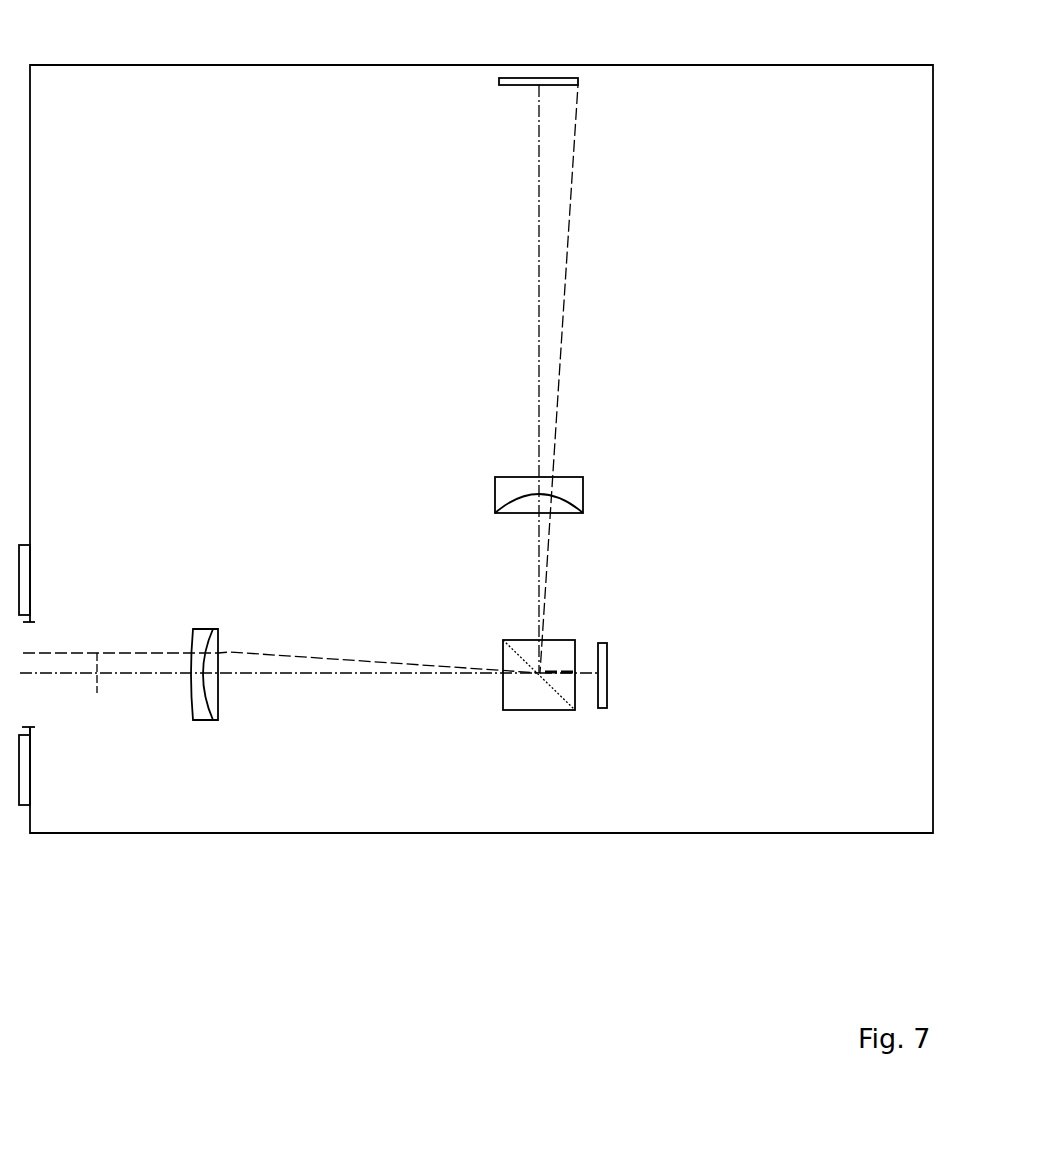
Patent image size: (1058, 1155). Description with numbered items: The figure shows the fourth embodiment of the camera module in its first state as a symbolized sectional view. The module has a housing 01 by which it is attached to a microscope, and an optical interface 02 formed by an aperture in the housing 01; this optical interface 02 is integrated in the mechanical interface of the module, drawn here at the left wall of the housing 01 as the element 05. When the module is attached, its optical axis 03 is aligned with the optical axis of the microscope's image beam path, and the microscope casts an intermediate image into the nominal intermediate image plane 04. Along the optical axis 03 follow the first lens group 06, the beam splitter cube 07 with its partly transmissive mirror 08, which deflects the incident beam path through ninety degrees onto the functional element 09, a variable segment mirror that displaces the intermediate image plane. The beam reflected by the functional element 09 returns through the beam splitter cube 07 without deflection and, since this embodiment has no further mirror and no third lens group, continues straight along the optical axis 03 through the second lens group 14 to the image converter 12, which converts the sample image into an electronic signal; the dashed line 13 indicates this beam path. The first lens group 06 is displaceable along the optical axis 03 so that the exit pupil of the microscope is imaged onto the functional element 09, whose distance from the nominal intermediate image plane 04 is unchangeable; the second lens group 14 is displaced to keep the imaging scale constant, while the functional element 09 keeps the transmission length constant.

The housing 01 is at (83, 833).
The optical interface 02 is at (33, 713).
The optical axis 03 is at (297, 674).
The nominal intermediate image plane 04 is at (97, 693).
The light source element 05 is at (22, 805).
The first lens group 06 is at (209, 720).
The beam splitter cube 07 is at (503, 710).
The partly transmissive mirror 08 is at (553, 688).
The functional element 09 is at (607, 708).
The image converter 12 is at (505, 78).
The light beam 13 is at (235, 653).
The second lens group 14 is at (497, 513).